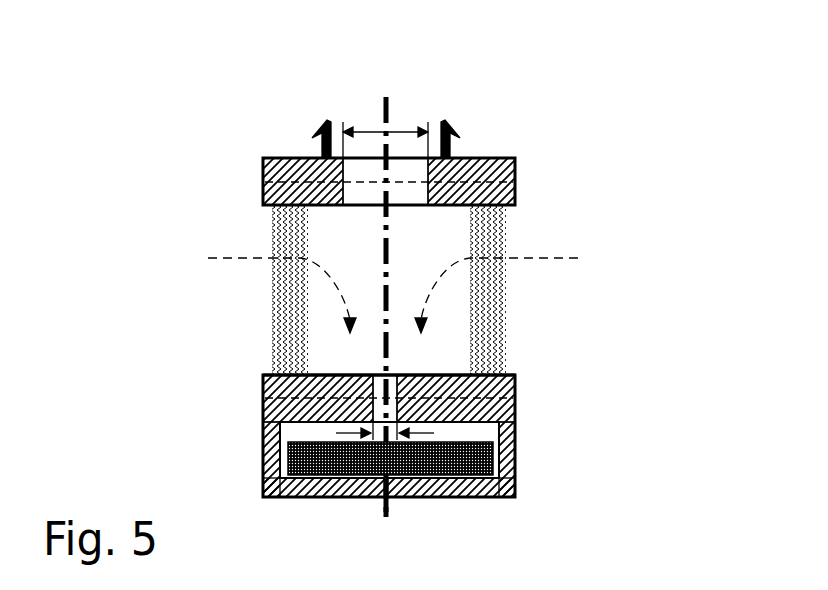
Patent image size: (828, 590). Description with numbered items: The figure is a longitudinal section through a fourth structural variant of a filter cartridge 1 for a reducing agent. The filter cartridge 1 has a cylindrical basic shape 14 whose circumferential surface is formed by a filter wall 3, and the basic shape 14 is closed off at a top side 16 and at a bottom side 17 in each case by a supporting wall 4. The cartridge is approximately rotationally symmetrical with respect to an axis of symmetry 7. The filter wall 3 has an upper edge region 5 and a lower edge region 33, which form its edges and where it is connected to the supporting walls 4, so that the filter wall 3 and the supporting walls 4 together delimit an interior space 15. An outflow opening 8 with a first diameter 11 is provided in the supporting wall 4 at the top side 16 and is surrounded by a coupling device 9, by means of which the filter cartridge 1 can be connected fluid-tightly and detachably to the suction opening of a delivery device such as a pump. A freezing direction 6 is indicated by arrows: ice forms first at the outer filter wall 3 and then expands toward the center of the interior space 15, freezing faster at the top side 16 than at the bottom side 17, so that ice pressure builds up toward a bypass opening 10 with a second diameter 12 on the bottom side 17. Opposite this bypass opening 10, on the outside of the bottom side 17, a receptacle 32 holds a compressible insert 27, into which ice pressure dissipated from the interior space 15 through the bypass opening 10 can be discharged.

The filter cartridge 1 is at (240, 134).
The filter wall 3 is at (272, 226).
The supporting wall 4 is at (478, 158).
The upper edge region 5 is at (483, 206).
The freezing direction 6 is at (250, 258).
The axis of symmetry 7 is at (388, 86).
The outflow opening 8 is at (370, 158).
The coupling device 9 is at (318, 146).
The bypass opening 10 is at (378, 476).
The first diameter 11 is at (400, 127).
The second diameter 12 is at (416, 476).
The basic shape 14 is at (476, 398).
The interior space 15 is at (462, 303).
The top side 16 is at (463, 158).
The bottom side 17 is at (478, 402).
The compressible insert 27 is at (298, 440).
The receptacle 32 is at (263, 472).
The lower edge region 33 is at (497, 375).